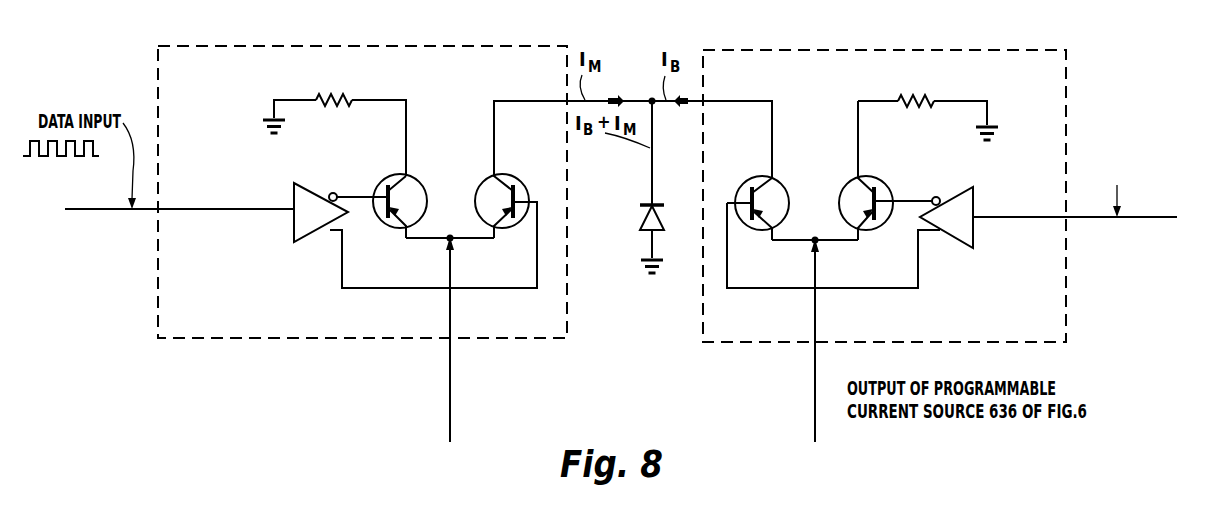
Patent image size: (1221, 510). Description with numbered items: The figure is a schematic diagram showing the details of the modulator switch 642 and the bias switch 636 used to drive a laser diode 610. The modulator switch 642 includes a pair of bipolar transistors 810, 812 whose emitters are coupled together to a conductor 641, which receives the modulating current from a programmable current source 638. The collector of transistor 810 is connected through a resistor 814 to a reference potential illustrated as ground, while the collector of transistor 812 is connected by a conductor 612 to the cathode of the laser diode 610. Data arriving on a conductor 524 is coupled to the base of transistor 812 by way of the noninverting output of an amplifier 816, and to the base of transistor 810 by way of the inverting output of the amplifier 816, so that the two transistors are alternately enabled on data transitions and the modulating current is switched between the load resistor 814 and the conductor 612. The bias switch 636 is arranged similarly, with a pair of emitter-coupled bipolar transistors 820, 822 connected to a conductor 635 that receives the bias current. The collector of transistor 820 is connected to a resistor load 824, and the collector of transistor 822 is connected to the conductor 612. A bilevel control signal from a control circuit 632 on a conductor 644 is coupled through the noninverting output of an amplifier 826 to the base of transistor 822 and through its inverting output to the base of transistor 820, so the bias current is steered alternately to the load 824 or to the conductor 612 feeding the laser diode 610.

The conductor 524 is at (230, 211).
The modulator switch 642 is at (464, 46).
The resistor 814 is at (346, 96).
The amplifier 816 is at (308, 184).
The bipolar transistor 810 is at (399, 177).
The bipolar transistor 812 is at (508, 177).
The conductor 641 is at (460, 378).
The conductor 612 is at (652, 171).
The laser diode 610 is at (641, 229).
The bias switch 636 is at (998, 49).
The bipolar transistor 822 is at (758, 179).
The bipolar transistor 820 is at (872, 178).
The resistor load 824 is at (917, 100).
The amplifier 826 is at (970, 186).
The conductor 635 is at (814, 366).
The conductor 644 is at (1117, 218).
The control circuit 632 is at (1140, 135).
The current source 638 is at (316, 430).